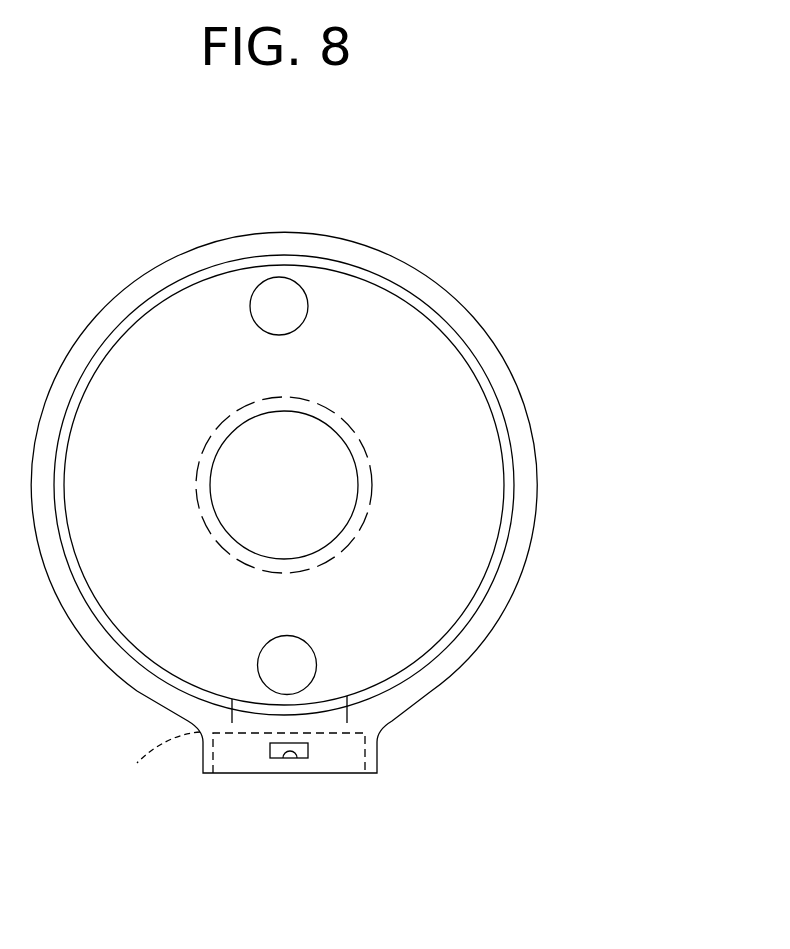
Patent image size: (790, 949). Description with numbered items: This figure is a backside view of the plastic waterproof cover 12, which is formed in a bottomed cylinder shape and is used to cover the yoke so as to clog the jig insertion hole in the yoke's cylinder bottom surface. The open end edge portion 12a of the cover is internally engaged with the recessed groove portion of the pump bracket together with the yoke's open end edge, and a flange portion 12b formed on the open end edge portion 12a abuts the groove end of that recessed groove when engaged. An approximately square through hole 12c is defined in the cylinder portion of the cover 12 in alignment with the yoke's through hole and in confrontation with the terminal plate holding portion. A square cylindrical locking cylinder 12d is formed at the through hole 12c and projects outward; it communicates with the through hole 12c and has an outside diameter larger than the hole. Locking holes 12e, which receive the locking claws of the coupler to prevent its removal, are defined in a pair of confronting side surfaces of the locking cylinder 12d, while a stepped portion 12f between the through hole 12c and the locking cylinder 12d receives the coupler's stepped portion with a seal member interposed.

The waterproof cover 12 is at (354, 532).
The open end edge portion 12a is at (510, 480).
The flange portion 12b is at (505, 387).
The through hole 12c is at (144, 760).
The locking cylinder 12d is at (204, 790).
The locking holes 12e is at (298, 757).
The stepped portion 12f is at (370, 752).